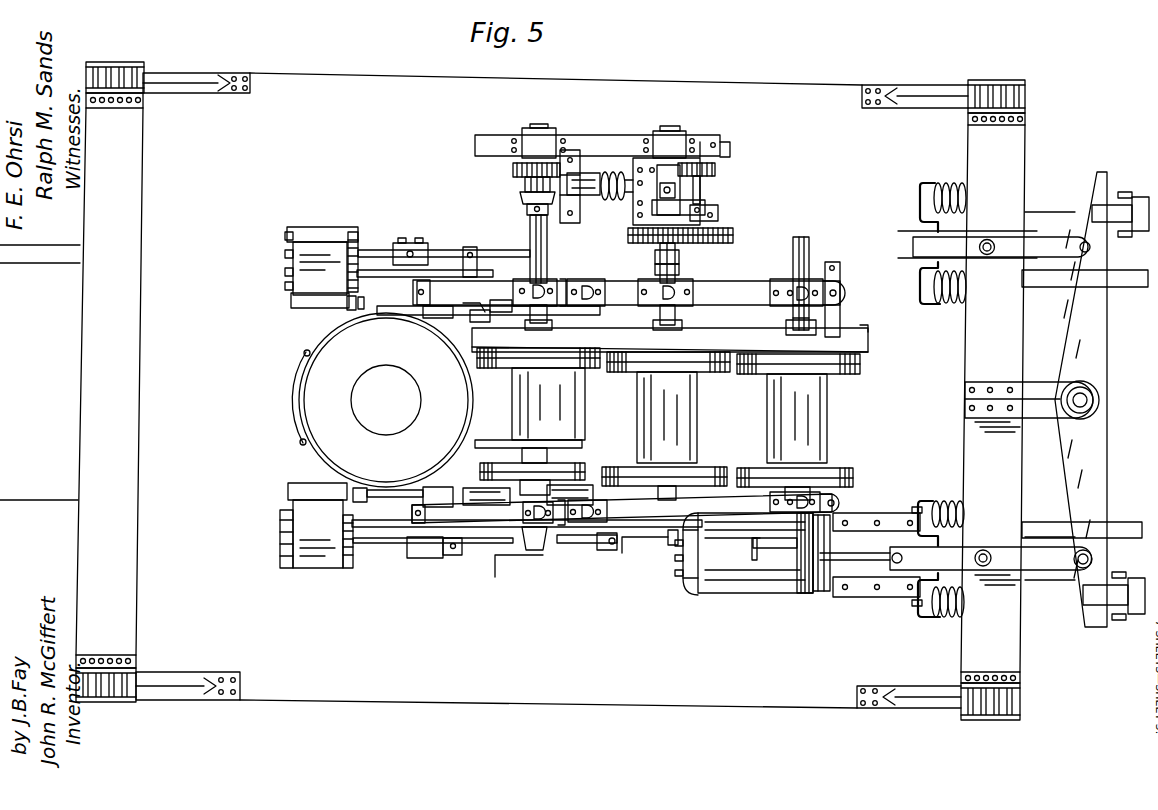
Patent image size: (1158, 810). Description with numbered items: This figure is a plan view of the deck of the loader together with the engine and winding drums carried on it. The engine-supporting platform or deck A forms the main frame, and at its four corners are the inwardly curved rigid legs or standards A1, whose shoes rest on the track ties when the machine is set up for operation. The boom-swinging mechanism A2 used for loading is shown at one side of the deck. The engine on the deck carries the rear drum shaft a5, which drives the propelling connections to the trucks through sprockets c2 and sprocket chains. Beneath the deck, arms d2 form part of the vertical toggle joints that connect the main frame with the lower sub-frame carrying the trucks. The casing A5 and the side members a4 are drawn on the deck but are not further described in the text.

The engine-supporting platform or deck A is at (617, 701).
The rigid legs or standards A1 is at (982, 718).
The boom-swinging mechanism A2 is at (853, 553).
The gear casing A5 is at (343, 332).
The side beams of frame a4 is at (134, 386).
The rear drum shaft a5 is at (530, 238).
The sprockets c2 is at (516, 171).
The arms d2 is at (611, 196).